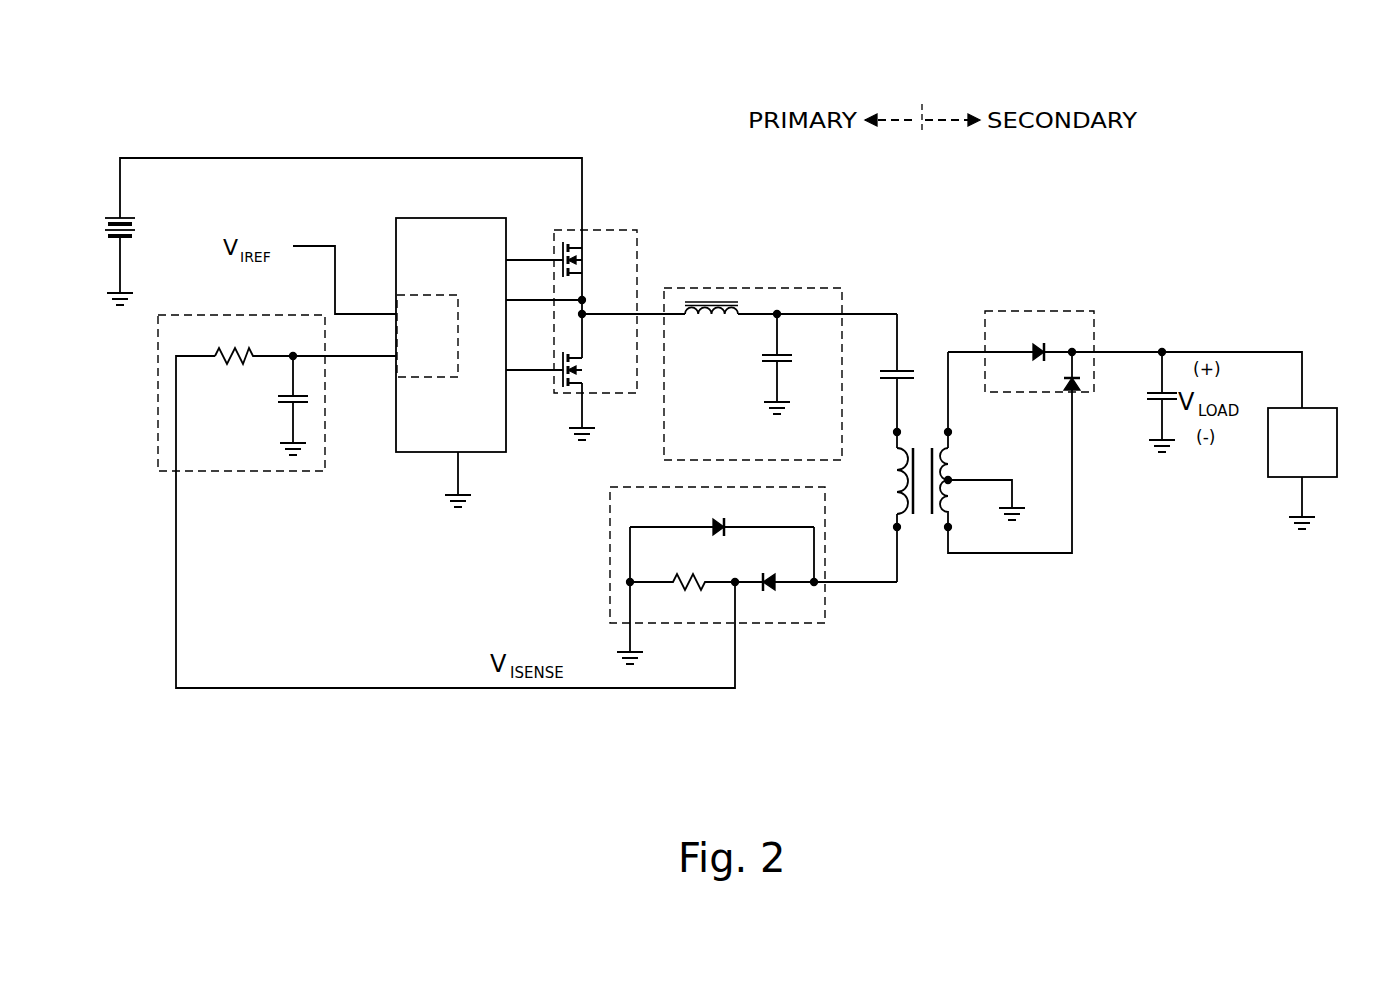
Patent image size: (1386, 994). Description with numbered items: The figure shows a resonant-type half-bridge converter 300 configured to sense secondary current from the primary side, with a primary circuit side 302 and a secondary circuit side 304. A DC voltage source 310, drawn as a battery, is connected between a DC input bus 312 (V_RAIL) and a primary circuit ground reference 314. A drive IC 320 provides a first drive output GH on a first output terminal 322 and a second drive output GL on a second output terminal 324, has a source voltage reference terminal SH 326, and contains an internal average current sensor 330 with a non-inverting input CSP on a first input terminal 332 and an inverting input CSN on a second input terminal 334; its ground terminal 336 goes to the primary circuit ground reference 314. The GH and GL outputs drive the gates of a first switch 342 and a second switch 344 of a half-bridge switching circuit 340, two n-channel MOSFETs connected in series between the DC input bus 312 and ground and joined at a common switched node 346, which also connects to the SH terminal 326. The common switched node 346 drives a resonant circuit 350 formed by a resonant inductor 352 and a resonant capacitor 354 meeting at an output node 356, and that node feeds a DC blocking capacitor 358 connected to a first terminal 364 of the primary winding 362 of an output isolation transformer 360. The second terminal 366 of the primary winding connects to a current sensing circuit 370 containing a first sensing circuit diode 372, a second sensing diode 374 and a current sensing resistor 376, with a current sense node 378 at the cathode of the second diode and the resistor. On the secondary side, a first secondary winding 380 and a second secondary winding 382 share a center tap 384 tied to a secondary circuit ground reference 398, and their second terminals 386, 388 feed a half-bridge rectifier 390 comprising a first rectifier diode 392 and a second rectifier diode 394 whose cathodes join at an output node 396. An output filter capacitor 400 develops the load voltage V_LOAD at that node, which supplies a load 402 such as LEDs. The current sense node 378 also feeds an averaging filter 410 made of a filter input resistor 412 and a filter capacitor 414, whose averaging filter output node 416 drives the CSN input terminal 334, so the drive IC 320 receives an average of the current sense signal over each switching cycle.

The resonant-type half-bridge converter 300 is at (1208, 266).
The primary circuit side 302 is at (845, 217).
The secondary circuit side 304 is at (1002, 217).
The DC voltage source 310 is at (120, 218).
The DC input bus 312 is at (352, 158).
The primary circuit ground reference 314 is at (121, 293).
The drive IC 320 is at (430, 218).
The first output terminal 322 is at (510, 260).
The second output terminal 324 is at (510, 371).
The source voltage reference terminal 326 is at (510, 301).
The internal average current sensor 330 is at (405, 296).
The first input terminal 332 is at (396, 314).
The second input terminal 334 is at (396, 356).
The ground terminal 336 is at (458, 468).
The half-bridge switching circuit 340 is at (597, 313).
The first switch 342 is at (575, 263).
The second switch 344 is at (575, 372).
The common switched node 346 is at (584, 314).
The resonant circuit 350 is at (780, 356).
The resonant inductor 352 is at (700, 320).
The resonant capacitor 354 is at (780, 361).
The output node 356 is at (779, 316).
The DC blocking capacitor 358 is at (900, 371).
The output isolation transformer 360 is at (963, 477).
The primary winding 362 is at (893, 477).
The first terminal of the primary winding 364 is at (895, 432).
The second terminal of the primary winding 366 is at (895, 527).
The current sensing circuit 370 is at (727, 569).
The first sensing circuit diode 372 is at (738, 515).
The second sensing circuit diode 374 is at (762, 578).
The current sensing resistor 376 is at (696, 586).
The current sense node 378 is at (738, 585).
The first secondary winding 380 is at (951, 462).
The second secondary winding 382 is at (950, 494).
The center tap 384 is at (951, 480).
The second terminal of the first secondary winding 386 is at (950, 432).
The second terminal of the second secondary winding 388 is at (1009, 472).
The half-bridge rectifier 390 is at (1055, 349).
The first rectifier diode 392 is at (1038, 350).
The second rectifier diode 394 is at (1068, 392).
The output node of the half-bridge rectifier 396 is at (1074, 350).
The secondary circuit ground reference 398 is at (1013, 508).
The output filter capacitor 400 is at (1160, 393).
The load 402 is at (1312, 408).
The averaging filter 410 is at (215, 393).
The filter input resistor 412 is at (215, 355).
The filter capacitor 414 is at (291, 396).
The averaging filter output node 416 is at (293, 354).